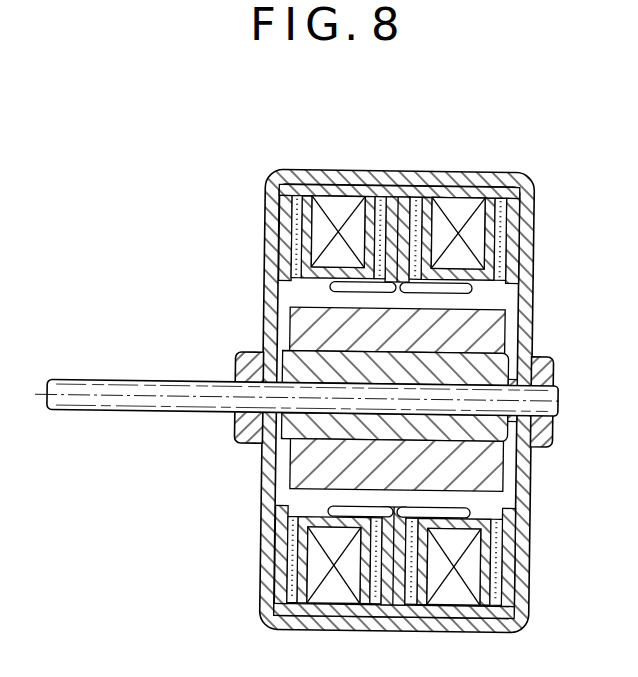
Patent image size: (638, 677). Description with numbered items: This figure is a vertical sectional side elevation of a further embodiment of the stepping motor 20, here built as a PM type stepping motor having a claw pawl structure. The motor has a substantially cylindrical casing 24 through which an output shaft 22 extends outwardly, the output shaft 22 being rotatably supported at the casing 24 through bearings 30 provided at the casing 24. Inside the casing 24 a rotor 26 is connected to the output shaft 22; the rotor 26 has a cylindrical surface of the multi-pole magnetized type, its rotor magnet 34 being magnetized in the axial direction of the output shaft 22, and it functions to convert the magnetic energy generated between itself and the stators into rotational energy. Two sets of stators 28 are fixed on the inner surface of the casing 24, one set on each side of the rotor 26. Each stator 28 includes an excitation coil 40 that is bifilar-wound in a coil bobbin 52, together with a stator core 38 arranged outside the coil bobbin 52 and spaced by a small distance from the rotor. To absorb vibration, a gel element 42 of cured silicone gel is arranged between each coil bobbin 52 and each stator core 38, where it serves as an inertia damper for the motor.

The stepping motor 20 is at (187, 234).
The output shaft 22 is at (136, 406).
The casing 24 is at (520, 291).
The rotor 26 is at (428, 400).
The stator 28 is at (282, 233).
The bearing 30 is at (250, 368).
The rotor magnet 34 is at (499, 467).
The stator core 38 is at (456, 196).
The excitation coil 40 is at (339, 205).
The gel element 42 is at (498, 540).
The coil bobbin 52 is at (495, 225).